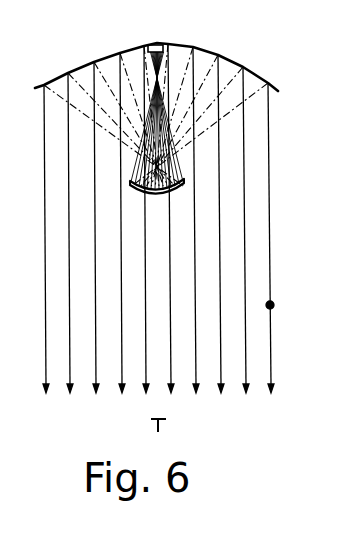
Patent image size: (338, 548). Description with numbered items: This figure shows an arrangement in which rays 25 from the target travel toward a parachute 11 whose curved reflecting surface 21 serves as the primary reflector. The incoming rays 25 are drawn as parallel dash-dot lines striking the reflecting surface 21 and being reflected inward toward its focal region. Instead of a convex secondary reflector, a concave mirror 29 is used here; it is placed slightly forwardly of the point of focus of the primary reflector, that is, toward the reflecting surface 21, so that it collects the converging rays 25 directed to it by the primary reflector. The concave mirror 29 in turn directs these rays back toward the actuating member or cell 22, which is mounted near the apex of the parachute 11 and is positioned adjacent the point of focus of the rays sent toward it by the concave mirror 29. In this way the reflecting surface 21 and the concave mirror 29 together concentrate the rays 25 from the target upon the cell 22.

The parachute 11 is at (139, 34).
The reflecting surface 21 is at (95, 60).
The actuating member 22 is at (163, 50).
The rays 25 is at (165, 226).
The concave mirror 29 is at (178, 175).